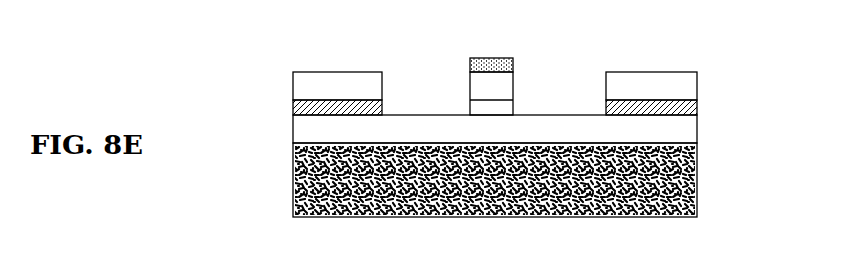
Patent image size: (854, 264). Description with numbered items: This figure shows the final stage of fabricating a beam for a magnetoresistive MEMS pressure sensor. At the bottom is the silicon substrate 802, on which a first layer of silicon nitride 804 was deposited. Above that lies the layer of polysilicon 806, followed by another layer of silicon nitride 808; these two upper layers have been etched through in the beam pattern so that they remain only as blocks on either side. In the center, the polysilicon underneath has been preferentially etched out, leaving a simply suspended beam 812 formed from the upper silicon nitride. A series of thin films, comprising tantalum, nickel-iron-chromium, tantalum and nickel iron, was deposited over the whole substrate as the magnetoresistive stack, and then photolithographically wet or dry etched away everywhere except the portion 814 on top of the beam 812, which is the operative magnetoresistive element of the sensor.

The silicon substrate 802 is at (697, 200).
The layer of silicon nitride 804 is at (697, 130).
The layer of polysilicon 806 is at (697, 100).
The layer of silicon nitride 808 is at (697, 72).
The beam 812 is at (515, 83).
The portion of the stack on the beam 814 is at (483, 57).